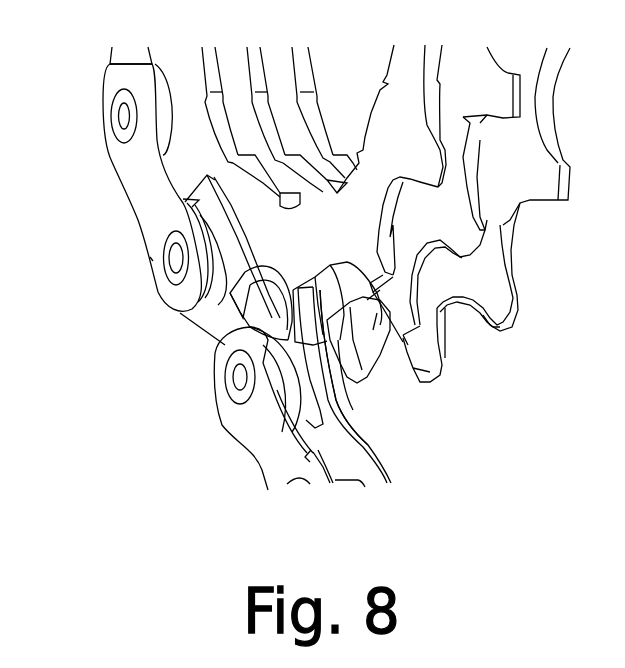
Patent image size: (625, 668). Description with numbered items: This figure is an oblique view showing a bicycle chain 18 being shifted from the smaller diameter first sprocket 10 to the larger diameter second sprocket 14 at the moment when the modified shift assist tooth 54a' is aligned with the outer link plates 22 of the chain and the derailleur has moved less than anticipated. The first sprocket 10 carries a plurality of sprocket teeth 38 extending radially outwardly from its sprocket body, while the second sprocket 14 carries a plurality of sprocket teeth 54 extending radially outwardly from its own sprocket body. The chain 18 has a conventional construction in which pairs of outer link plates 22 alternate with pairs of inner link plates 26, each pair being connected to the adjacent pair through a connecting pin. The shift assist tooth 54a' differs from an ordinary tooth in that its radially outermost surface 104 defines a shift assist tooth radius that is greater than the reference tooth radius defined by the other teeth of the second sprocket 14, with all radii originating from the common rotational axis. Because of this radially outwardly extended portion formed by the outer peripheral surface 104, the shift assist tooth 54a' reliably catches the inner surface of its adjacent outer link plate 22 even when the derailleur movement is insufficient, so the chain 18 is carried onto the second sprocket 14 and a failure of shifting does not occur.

The first sprocket 10 is at (306, 253).
The second sprocket 14 is at (442, 228).
The bicycle chain 18 is at (100, 181).
The outer link plate 22 is at (146, 201).
The inner link plate 26 is at (212, 318).
The sprocket tooth 38 is at (440, 134).
The sprocket tooth 54 is at (479, 218).
The shift assist tooth 54a' is at (310, 299).
The radially outermost surface 104 is at (344, 398).